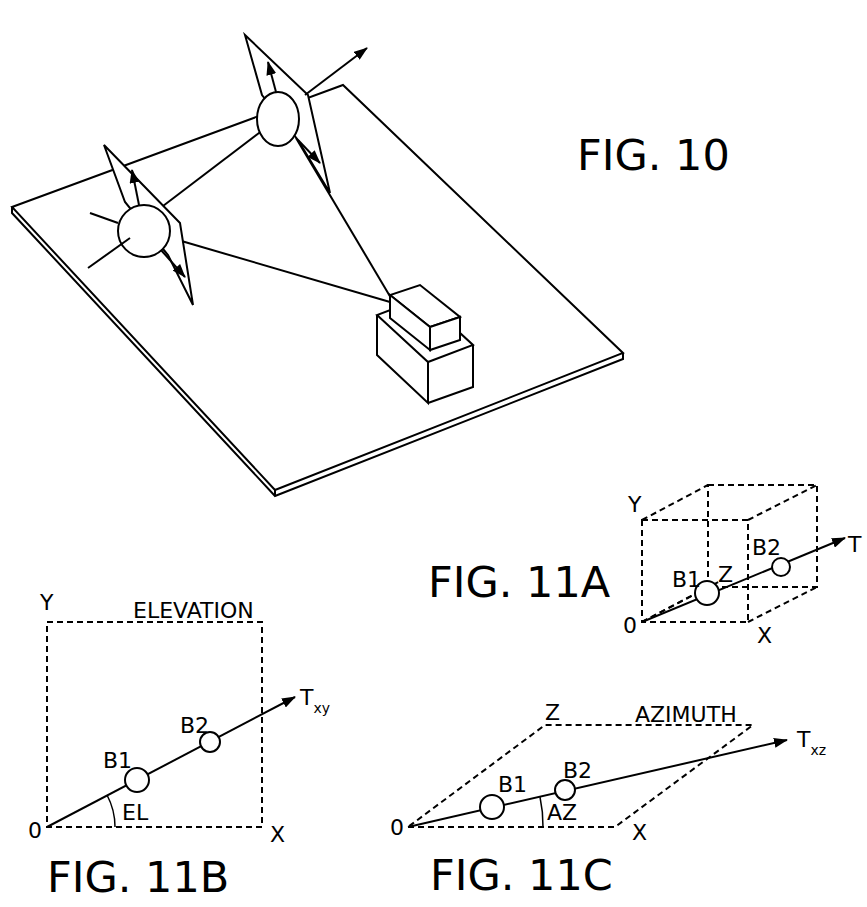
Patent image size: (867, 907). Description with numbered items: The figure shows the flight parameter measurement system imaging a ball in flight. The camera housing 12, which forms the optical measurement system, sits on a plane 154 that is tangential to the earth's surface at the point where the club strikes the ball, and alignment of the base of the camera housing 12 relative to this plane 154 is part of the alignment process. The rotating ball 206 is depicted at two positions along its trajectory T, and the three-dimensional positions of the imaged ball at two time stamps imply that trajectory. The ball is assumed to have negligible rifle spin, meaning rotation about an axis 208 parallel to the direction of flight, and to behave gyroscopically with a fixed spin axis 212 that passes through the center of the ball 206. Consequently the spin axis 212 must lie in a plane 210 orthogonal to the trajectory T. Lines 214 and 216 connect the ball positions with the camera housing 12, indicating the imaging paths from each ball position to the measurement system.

The camera housing 12 is at (438, 293).
The plane 154 is at (572, 300).
The rotating ball 206 is at (137, 257).
The axis 208 is at (352, 63).
The plane 210 is at (183, 302).
The spin axis 212 is at (202, 168).
The line of sight from first sensor 214 is at (323, 285).
The line of sight from second sensor 216 is at (358, 236).